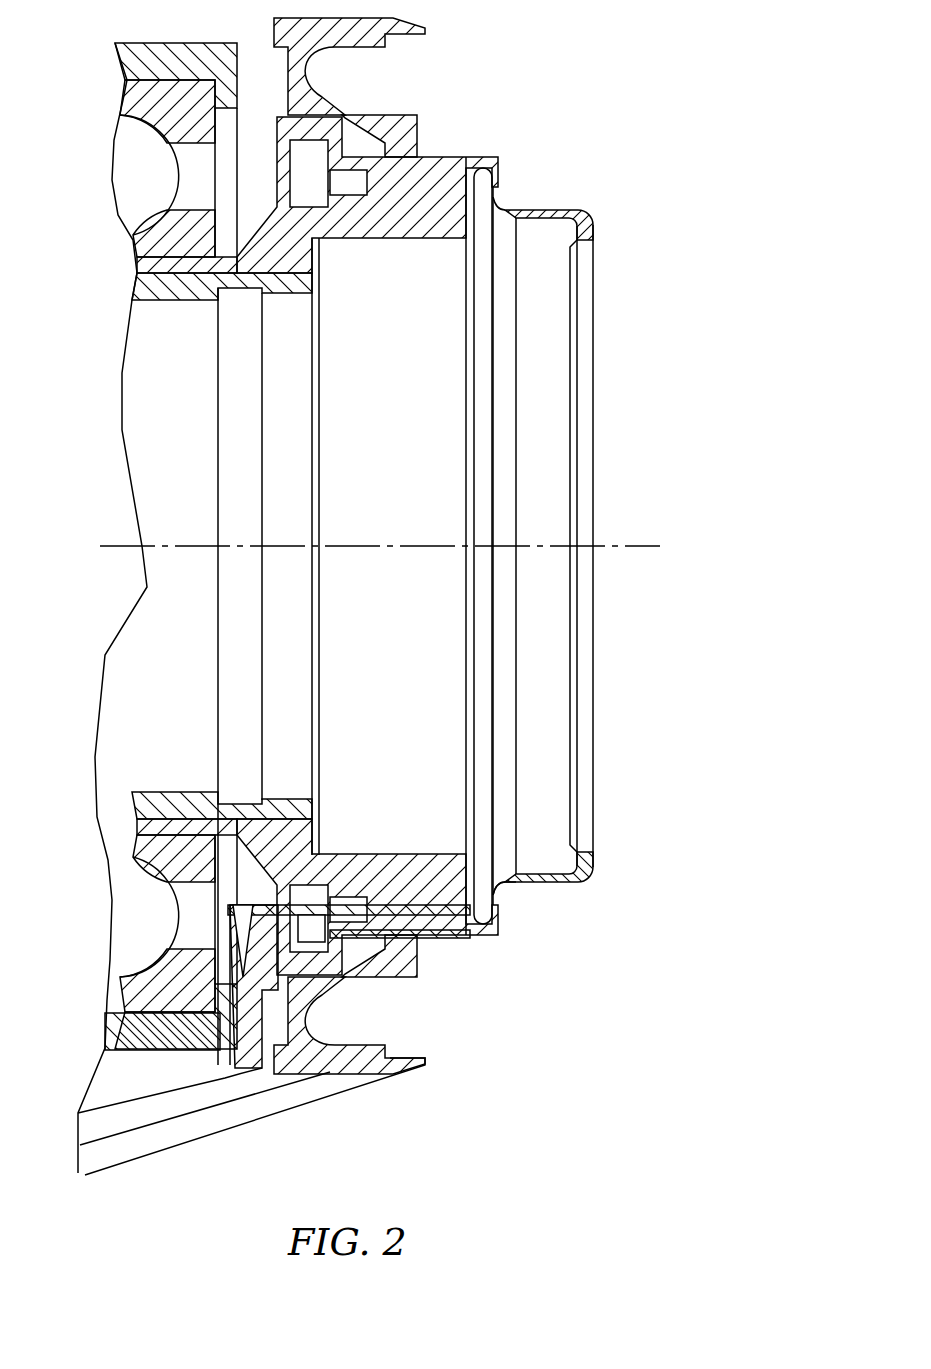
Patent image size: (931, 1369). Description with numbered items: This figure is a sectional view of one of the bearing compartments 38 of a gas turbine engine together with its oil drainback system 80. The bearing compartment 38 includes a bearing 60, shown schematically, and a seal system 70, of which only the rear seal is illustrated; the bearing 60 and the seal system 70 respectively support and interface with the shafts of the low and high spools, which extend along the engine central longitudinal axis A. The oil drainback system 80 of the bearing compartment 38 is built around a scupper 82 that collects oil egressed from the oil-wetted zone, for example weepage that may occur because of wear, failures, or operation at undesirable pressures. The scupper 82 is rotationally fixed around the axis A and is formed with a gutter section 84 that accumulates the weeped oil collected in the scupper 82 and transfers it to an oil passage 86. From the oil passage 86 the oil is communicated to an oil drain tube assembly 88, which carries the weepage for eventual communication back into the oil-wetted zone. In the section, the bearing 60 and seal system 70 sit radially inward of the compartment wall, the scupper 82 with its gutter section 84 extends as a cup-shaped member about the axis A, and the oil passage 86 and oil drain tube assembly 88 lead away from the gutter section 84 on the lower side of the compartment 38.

The bearing compartment 38 is at (547, 97).
The bearing 60 is at (131, 163).
The seal system 70 is at (423, 218).
The oil drainback system 80 is at (531, 905).
The scupper 82 is at (545, 757).
The gutter section 84 is at (500, 926).
The oil passage 86 is at (426, 922).
The oil drain tube assembly 88 is at (256, 1012).
The engine central longitudinal axis A is at (648, 552).